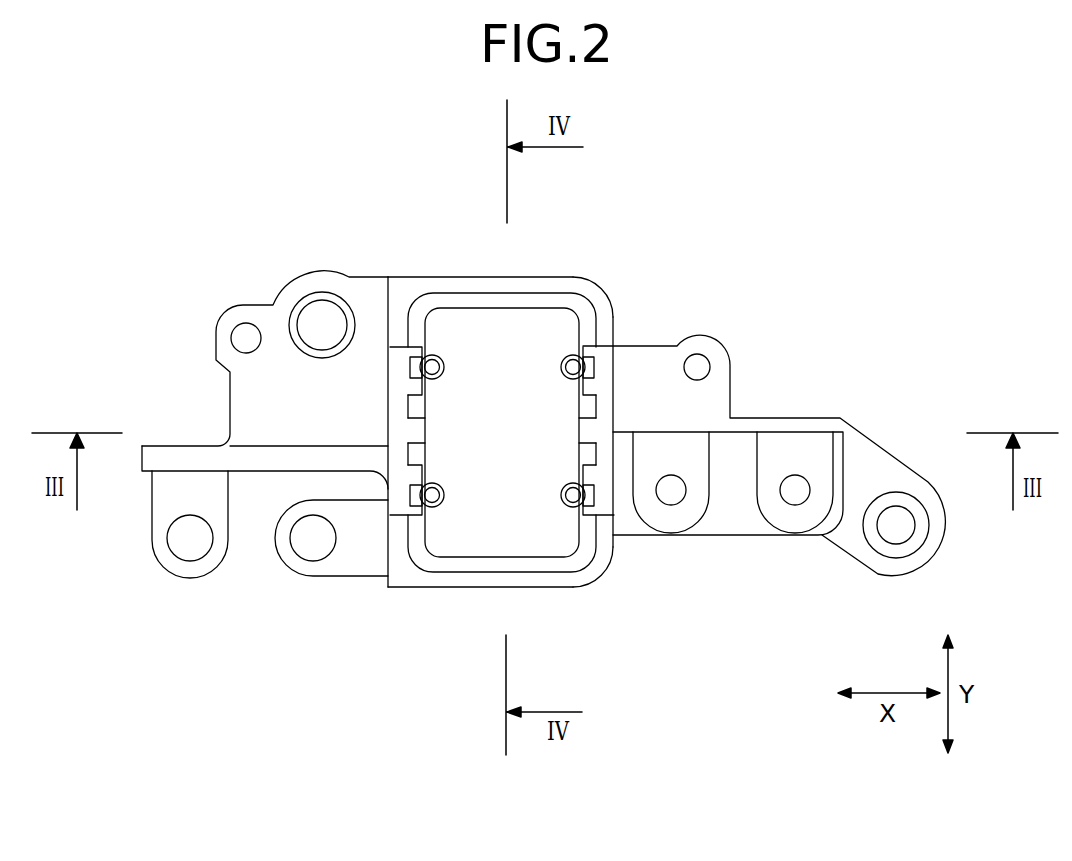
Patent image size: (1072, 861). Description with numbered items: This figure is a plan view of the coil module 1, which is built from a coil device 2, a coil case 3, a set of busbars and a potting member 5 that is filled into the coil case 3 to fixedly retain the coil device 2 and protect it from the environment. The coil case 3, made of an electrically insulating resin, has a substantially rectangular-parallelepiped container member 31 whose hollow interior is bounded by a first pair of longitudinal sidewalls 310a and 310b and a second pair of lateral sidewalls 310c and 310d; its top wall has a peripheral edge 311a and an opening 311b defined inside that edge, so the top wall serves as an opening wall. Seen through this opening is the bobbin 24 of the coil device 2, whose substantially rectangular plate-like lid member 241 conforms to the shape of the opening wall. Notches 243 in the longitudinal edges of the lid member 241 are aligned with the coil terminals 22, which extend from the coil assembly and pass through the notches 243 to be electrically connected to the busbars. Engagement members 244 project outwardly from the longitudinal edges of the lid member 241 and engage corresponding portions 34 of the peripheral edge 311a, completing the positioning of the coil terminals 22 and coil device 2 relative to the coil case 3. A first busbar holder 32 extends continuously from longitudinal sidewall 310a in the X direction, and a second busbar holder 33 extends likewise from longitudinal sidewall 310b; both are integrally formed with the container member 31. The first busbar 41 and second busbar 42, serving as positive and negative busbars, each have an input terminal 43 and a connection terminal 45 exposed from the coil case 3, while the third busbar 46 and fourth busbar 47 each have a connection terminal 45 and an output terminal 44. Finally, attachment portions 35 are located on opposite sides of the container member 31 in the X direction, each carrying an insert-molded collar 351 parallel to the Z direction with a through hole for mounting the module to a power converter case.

The coil module 1 is at (670, 717).
The coil device 2 is at (447, 307).
The bobbin 24 is at (489, 383).
The lid member 241 is at (473, 323).
The coil terminals 22 is at (575, 355).
The notches 243 is at (572, 355).
The engagement members 244 is at (600, 397).
The connection terminal 45 is at (590, 365).
The coil case 3 is at (392, 573).
The container member 31 is at (590, 583).
The longitudinal sidewall 310a is at (385, 302).
The longitudinal sidewall 310b is at (612, 528).
The lateral sidewall 310c is at (497, 323).
The lateral sidewall 310d is at (513, 588).
The peripheral edge 311a is at (603, 307).
The opening 311b is at (513, 572).
The first busbar holder 32 is at (273, 462).
The second busbar holder 33 is at (733, 520).
The corresponding portions 34 is at (672, 347).
The attachment portions 35 is at (308, 282).
The collar 351 is at (290, 312).
The first busbar 41 is at (163, 503).
The second busbar 42 is at (338, 562).
The input terminal 43 is at (180, 567).
The output terminal 44 is at (688, 518).
The third busbar 46 is at (677, 450).
The fourth busbar 47 is at (807, 450).
The potting member 5 is at (598, 552).